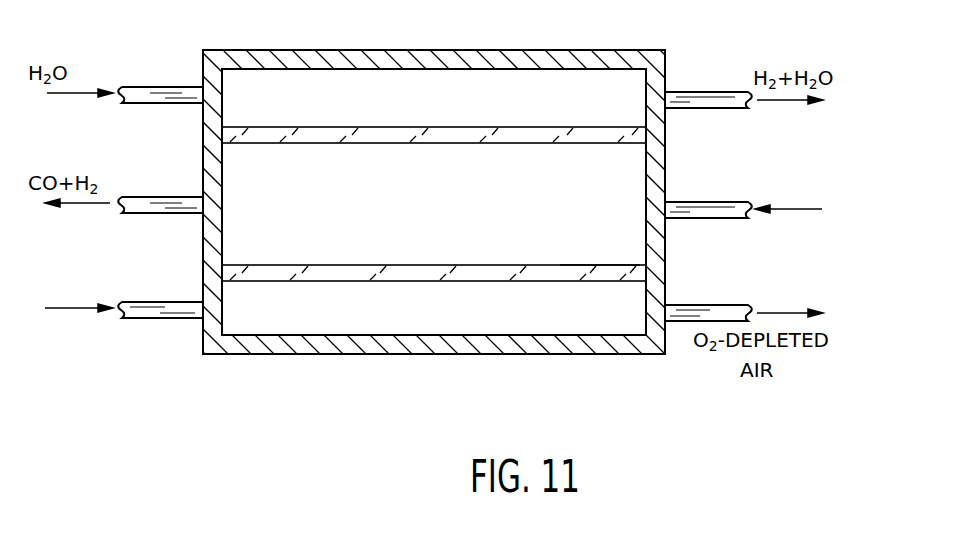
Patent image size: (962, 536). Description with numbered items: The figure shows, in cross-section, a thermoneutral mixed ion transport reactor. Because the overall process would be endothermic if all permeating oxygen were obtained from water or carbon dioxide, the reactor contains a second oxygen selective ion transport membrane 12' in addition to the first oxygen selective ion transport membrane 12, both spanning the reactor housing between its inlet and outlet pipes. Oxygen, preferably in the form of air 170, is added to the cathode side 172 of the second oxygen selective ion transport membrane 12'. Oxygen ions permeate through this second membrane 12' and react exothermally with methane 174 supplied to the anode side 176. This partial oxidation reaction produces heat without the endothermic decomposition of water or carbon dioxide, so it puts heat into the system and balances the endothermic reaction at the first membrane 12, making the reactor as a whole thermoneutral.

The oxygen selective ion transport membrane 12 is at (471, 145).
The second oxygen selective ion transport membrane 12' is at (474, 281).
The air 170 is at (62, 309).
The cathode side 172 is at (253, 283).
The methane 174 is at (795, 207).
The anode side 176 is at (590, 266).